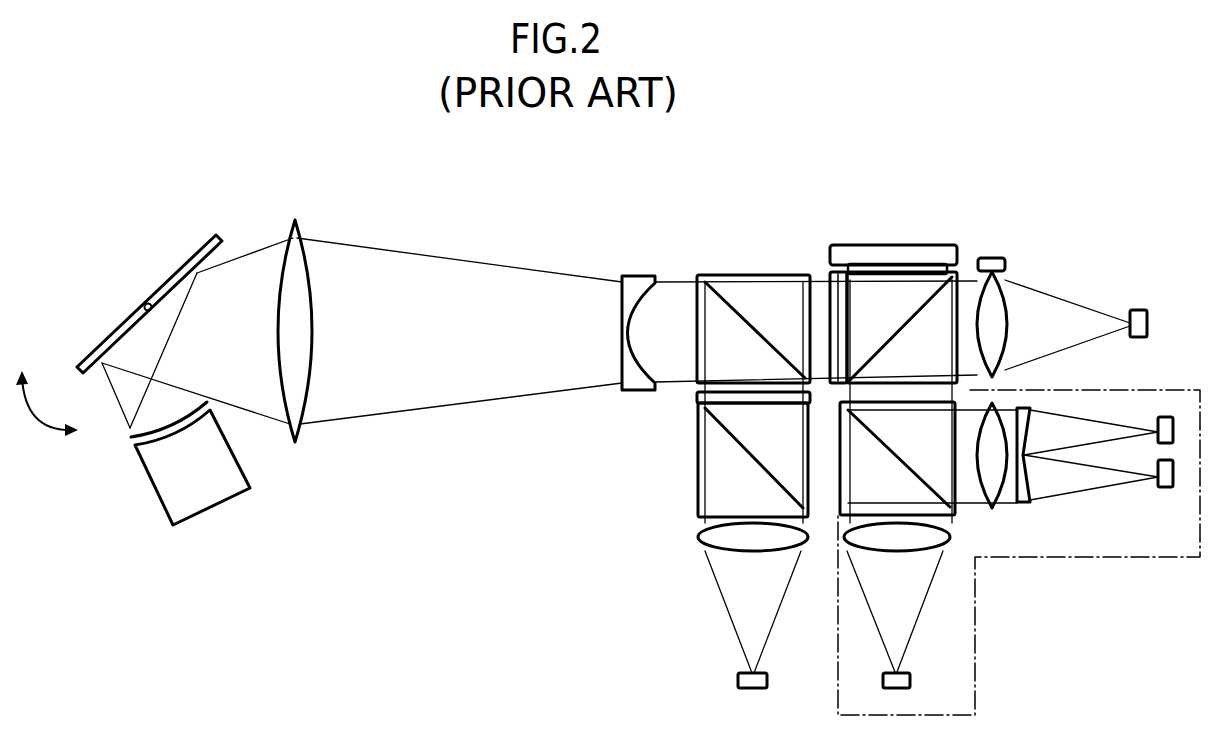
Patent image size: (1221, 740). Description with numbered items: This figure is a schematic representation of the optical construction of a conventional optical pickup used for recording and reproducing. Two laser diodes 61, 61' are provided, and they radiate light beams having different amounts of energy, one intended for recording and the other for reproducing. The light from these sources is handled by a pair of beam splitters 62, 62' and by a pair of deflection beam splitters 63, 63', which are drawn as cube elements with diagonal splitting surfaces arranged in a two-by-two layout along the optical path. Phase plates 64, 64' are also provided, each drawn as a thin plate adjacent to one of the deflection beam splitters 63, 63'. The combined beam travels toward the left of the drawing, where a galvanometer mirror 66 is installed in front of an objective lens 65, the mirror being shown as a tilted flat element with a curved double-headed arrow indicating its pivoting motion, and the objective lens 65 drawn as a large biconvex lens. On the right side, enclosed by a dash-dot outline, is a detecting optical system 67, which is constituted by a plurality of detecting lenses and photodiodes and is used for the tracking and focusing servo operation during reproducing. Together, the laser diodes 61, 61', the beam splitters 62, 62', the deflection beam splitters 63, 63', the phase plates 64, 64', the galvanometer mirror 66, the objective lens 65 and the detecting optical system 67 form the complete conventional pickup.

The laser diode 61 is at (1146, 294).
The laser diode 61' is at (733, 705).
The beam splitter 62 is at (753, 294).
The beam splitter 62' is at (910, 514).
The deflection beam splitter 63 is at (916, 296).
The deflection beam splitter 63' is at (702, 462).
The phase plate 64 is at (823, 294).
The phase plate 64' is at (703, 424).
The objective lens 65 is at (302, 397).
The galvanometer mirror 66 is at (207, 246).
The detecting optical system 67 is at (1172, 557).